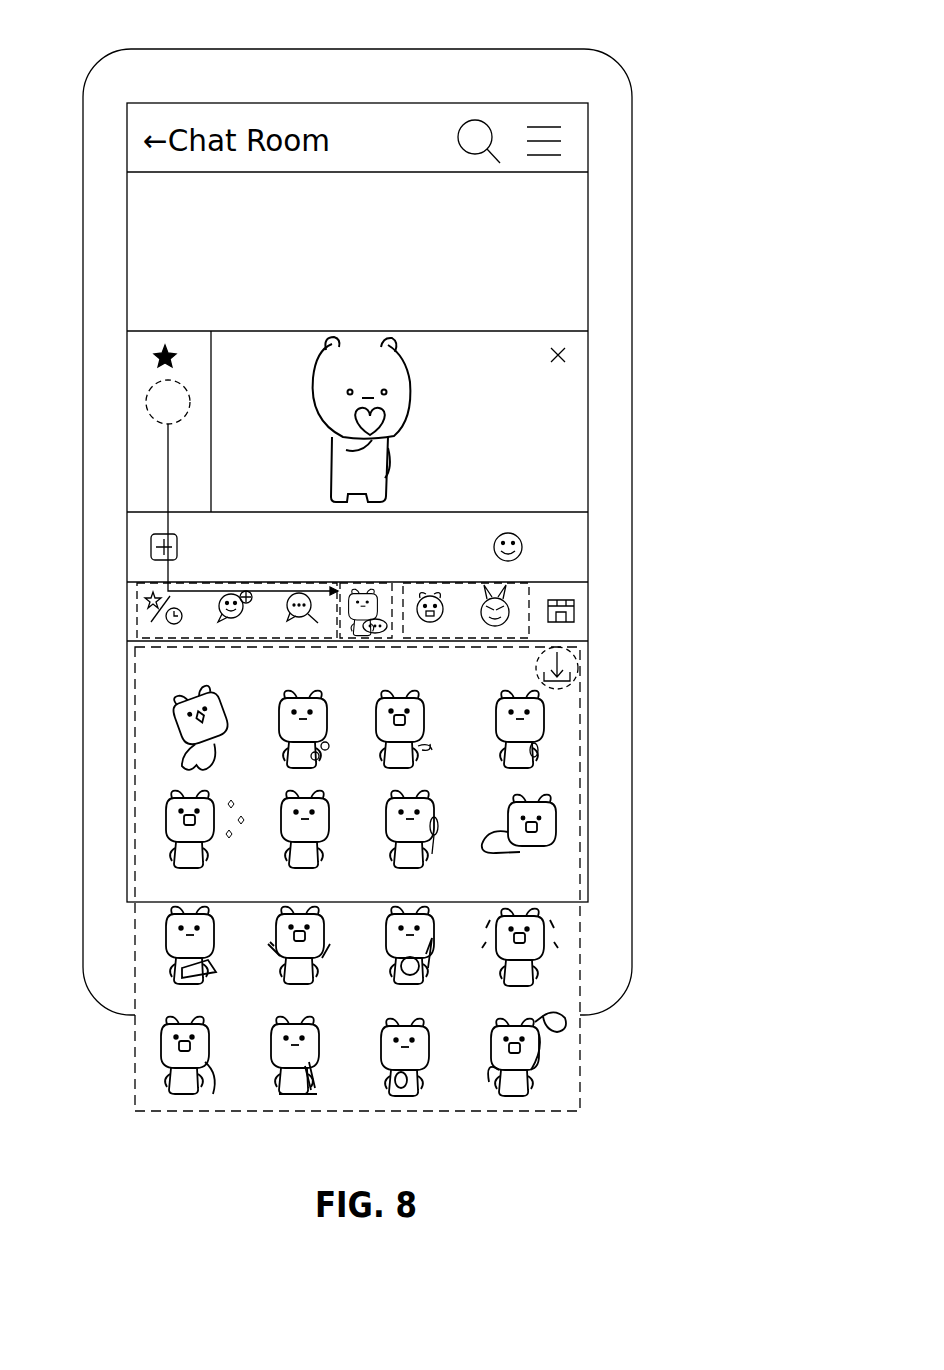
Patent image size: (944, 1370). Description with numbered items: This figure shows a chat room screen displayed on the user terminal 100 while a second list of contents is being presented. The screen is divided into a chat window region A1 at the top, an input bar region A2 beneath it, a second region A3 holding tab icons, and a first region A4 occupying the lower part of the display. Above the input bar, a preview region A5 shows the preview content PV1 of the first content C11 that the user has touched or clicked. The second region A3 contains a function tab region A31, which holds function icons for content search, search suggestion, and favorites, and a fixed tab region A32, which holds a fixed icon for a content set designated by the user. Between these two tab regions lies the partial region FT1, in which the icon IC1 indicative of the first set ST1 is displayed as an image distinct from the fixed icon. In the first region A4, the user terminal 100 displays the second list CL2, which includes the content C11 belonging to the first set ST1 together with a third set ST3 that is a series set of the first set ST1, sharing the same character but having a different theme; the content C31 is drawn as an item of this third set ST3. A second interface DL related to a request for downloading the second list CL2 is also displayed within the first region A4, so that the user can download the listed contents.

The user terminal 100 is at (356, 49).
The chat window region A1 is at (596, 177).
The input bar region A2 is at (596, 517).
The second region A3 is at (596, 583).
The first region A4 is at (596, 645).
The preview region A5 is at (124, 331).
The function tab region A31 is at (137, 612).
The fixed tab region A32 is at (529, 587).
The preview content PV1 is at (572, 446).
The partial region FT1 is at (363, 583).
The icon IC1 is at (358, 597).
The second interface DL is at (573, 656).
The content C11 is at (185, 714).
The third content item C31 is at (165, 940).
The first set ST1 is at (298, 761).
The third set ST3 is at (295, 995).
The second list CL2 is at (220, 1112).